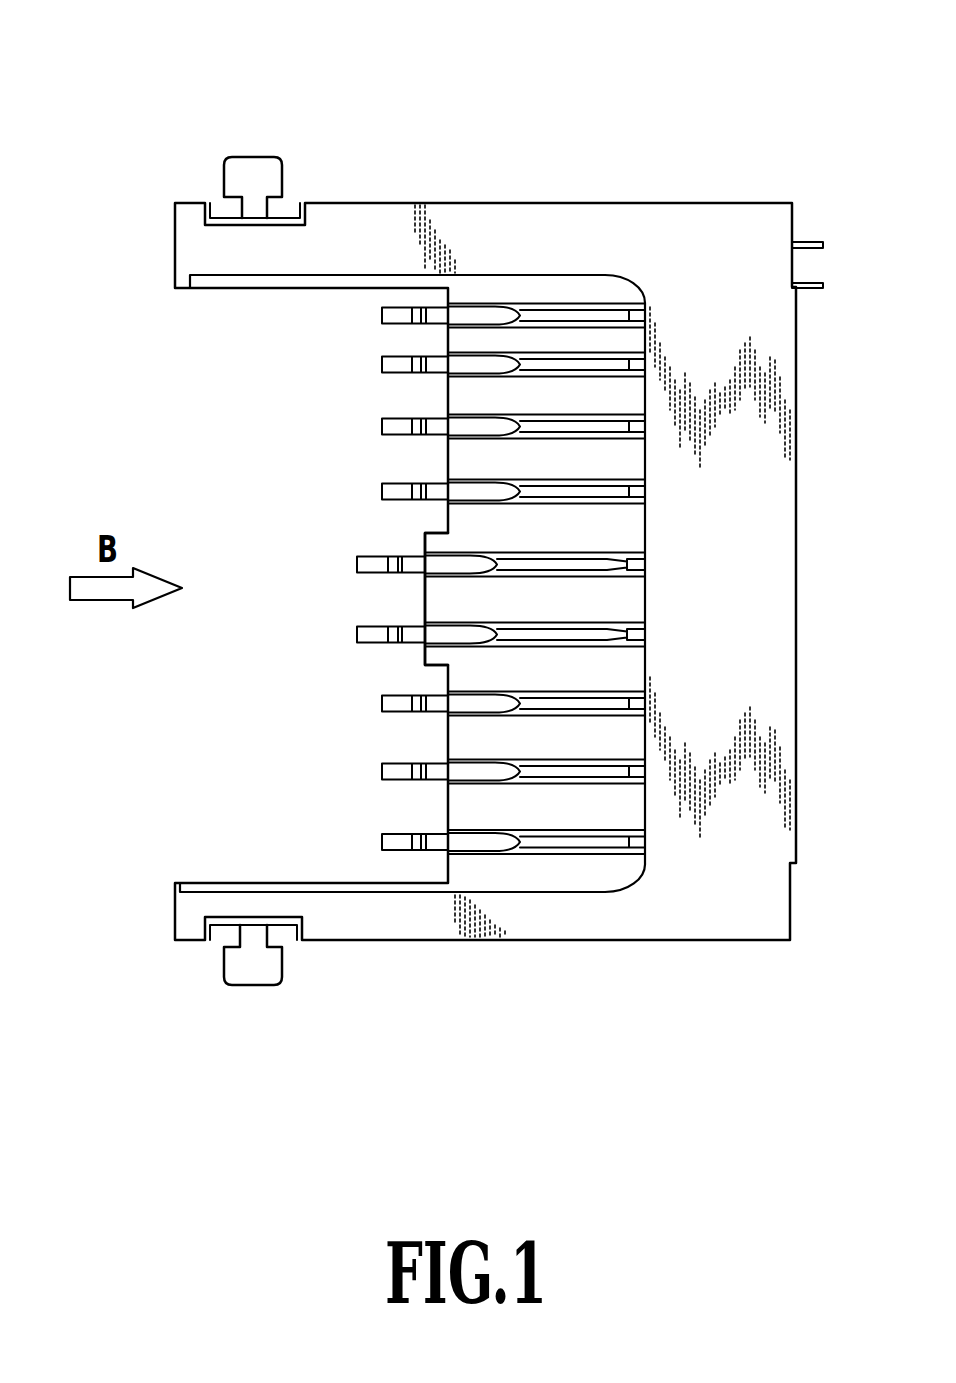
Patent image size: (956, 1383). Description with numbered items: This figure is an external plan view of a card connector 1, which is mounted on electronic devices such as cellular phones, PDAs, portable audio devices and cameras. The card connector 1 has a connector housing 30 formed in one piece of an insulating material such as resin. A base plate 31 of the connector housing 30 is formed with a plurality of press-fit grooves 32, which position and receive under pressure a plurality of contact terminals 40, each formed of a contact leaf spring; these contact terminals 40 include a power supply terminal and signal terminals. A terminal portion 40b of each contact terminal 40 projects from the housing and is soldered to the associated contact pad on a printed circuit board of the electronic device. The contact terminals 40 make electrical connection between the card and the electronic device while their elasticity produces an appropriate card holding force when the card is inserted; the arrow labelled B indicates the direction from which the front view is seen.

The card connector 1 is at (485, 190).
The connector housing 30 is at (695, 255).
The base plate 31 is at (470, 395).
The press-fit grooves 32 is at (455, 648).
The contact terminals 40 is at (447, 572).
The terminal portion 40b is at (393, 490).